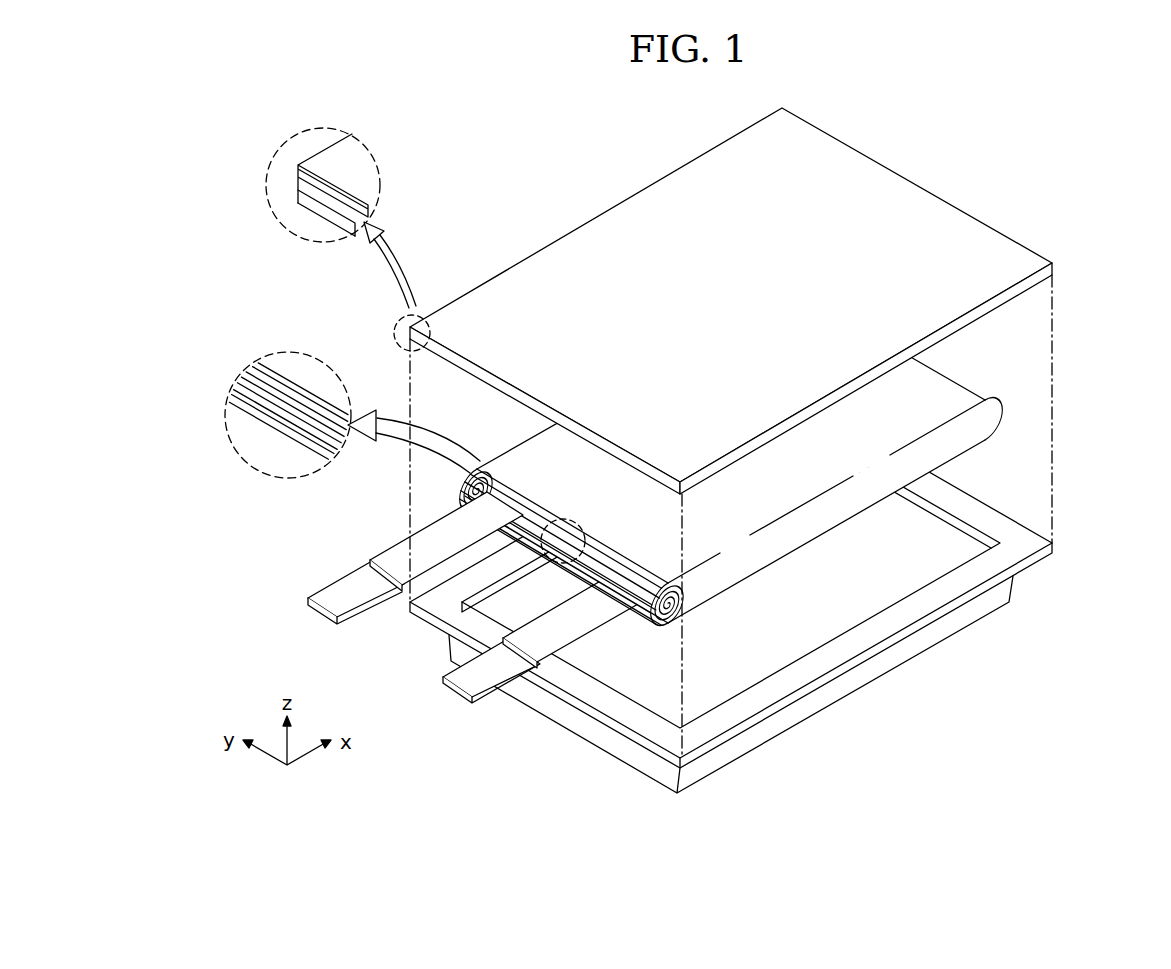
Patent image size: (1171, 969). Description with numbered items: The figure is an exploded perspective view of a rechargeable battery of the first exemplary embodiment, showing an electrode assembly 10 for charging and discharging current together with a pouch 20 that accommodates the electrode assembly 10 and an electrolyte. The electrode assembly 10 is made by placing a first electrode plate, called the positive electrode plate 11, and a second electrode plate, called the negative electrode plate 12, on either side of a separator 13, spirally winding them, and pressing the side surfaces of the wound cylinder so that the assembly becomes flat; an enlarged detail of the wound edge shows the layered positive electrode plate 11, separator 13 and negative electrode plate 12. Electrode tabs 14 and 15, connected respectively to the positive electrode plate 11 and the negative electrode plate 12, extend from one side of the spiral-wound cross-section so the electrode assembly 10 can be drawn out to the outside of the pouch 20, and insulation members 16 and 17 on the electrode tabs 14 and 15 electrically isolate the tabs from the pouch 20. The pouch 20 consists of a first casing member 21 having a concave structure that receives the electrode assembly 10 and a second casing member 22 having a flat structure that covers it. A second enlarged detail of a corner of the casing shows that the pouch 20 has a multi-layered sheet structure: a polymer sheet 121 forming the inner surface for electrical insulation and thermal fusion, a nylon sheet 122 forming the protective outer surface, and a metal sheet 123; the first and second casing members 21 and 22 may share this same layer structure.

The electrode assembly 10 is at (851, 518).
The first electrode plate (positive electrode plate) 11 is at (262, 416).
The second electrode plate (negative electrode plate) 12 is at (290, 402).
The separator 13 is at (308, 428).
The electrode tab 14 is at (498, 668).
The electrode tab 15 is at (358, 592).
The insulation member 16 is at (575, 630).
The insulation member 17 is at (433, 538).
The pouch 20 is at (1125, 333).
The first casing member 21 is at (1003, 523).
The second casing member 22 is at (1010, 298).
The polymer sheet 121 is at (318, 205).
The nylon sheet 122 is at (300, 169).
The metal sheet 123 is at (302, 184).